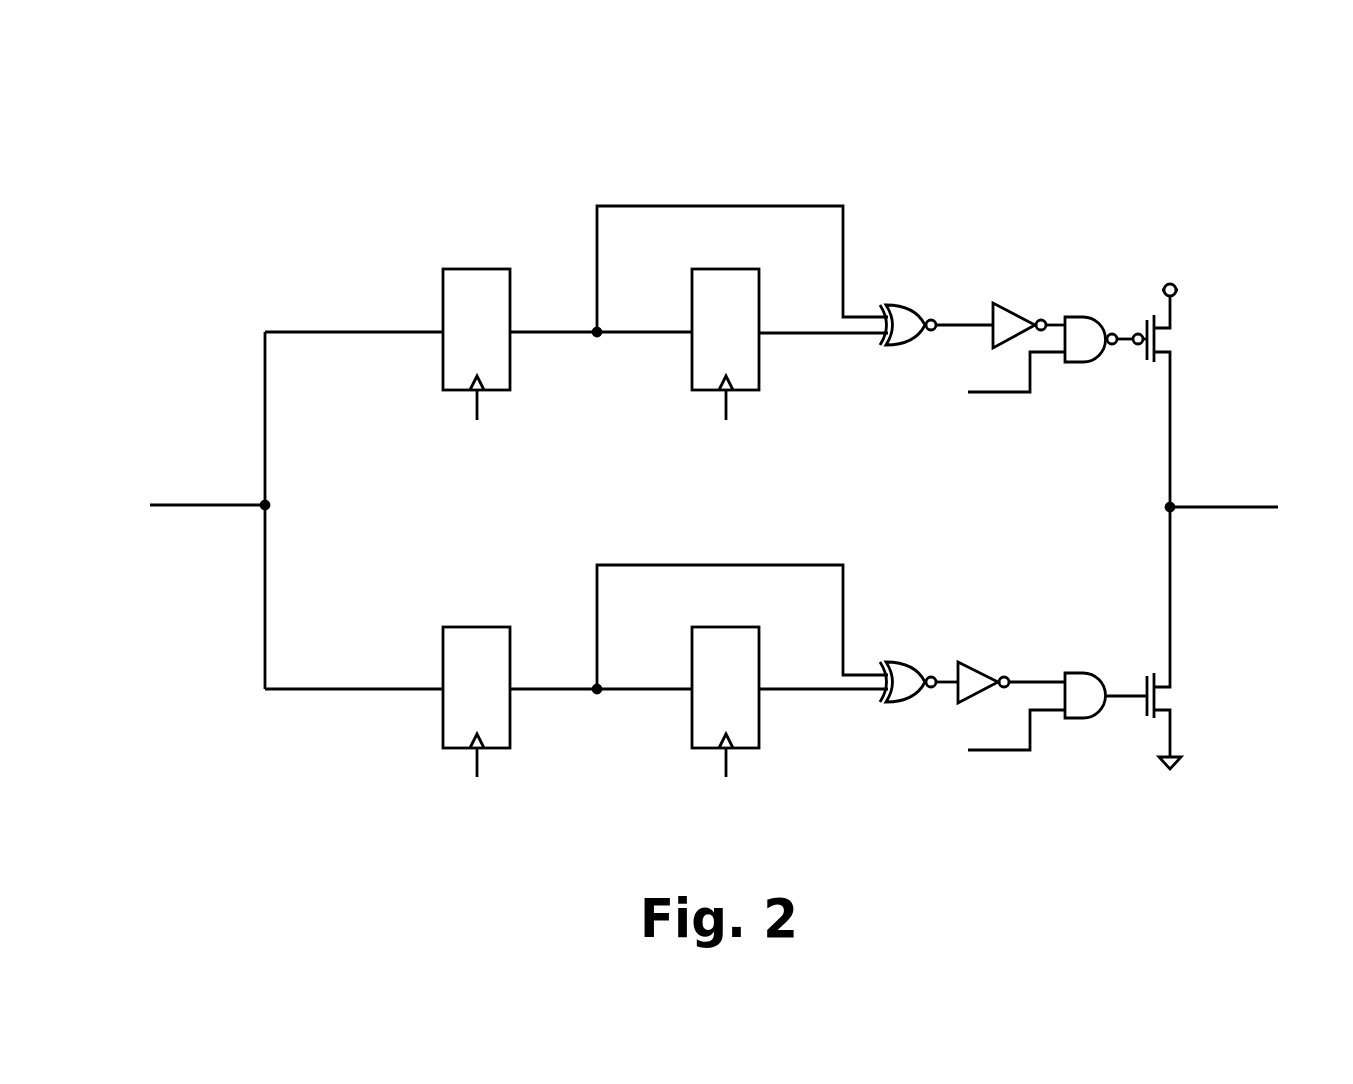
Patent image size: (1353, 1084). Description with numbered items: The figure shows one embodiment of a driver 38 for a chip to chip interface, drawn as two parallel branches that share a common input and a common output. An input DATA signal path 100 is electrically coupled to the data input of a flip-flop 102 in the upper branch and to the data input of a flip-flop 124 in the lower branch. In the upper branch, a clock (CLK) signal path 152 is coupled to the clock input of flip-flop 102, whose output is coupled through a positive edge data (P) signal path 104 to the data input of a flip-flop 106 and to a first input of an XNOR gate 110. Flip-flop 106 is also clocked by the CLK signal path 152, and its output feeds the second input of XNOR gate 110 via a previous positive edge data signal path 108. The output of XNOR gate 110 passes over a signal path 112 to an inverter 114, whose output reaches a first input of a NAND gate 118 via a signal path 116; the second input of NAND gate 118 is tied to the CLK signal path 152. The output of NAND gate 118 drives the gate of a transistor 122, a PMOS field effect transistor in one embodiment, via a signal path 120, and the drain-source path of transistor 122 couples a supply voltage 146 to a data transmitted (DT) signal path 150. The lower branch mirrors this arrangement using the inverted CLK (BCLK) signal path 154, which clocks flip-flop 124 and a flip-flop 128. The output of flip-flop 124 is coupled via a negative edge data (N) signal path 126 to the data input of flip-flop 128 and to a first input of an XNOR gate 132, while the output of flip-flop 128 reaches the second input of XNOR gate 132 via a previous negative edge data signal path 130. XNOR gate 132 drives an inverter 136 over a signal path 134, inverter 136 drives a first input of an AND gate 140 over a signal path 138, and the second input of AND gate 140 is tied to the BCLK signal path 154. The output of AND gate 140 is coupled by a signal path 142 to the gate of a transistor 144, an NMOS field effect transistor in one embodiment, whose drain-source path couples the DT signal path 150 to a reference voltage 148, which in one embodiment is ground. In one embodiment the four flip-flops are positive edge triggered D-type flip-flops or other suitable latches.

The driver 38 is at (598, 136).
The input DATA signal path 100 is at (200, 503).
The flip-flop 102 is at (476, 269).
The positive edge data (P) signal path 104 is at (597, 337).
The flip-flop 106 is at (726, 269).
The previous positive edge data (P-1) signal path 108 is at (778, 332).
The XNOR gate 110 is at (900, 306).
The signal path 112 is at (955, 322).
The inverter 114 is at (1008, 312).
The signal path 116 is at (1060, 322).
The NAND gate 118 is at (1085, 317).
The signal path 120 is at (1130, 335).
The transistor 122 is at (1145, 367).
The flip-flop 124 is at (476, 627).
The negative edge data (N) signal path 126 is at (597, 693).
The flip-flop 128 is at (726, 627).
The previous negative edge data (N-1) signal path 130 is at (778, 689).
The XNOR gate 132 is at (900, 663).
The signal path 134 is at (947, 678).
The inverter 136 is at (964, 668).
The signal path 138 is at (1033, 680).
The AND gate 140 is at (1080, 673).
The signal path 142 is at (1112, 700).
The transistor 144 is at (1148, 673).
The supply voltage 146 is at (1176, 285).
The reference voltage 148 is at (1182, 763).
The data transmitted (DT) signal path 150 is at (1210, 503).
The clock (CLK) signal path 152 is at (477, 405).
The inverted CLK (BCLK) signal path 154 is at (477, 762).